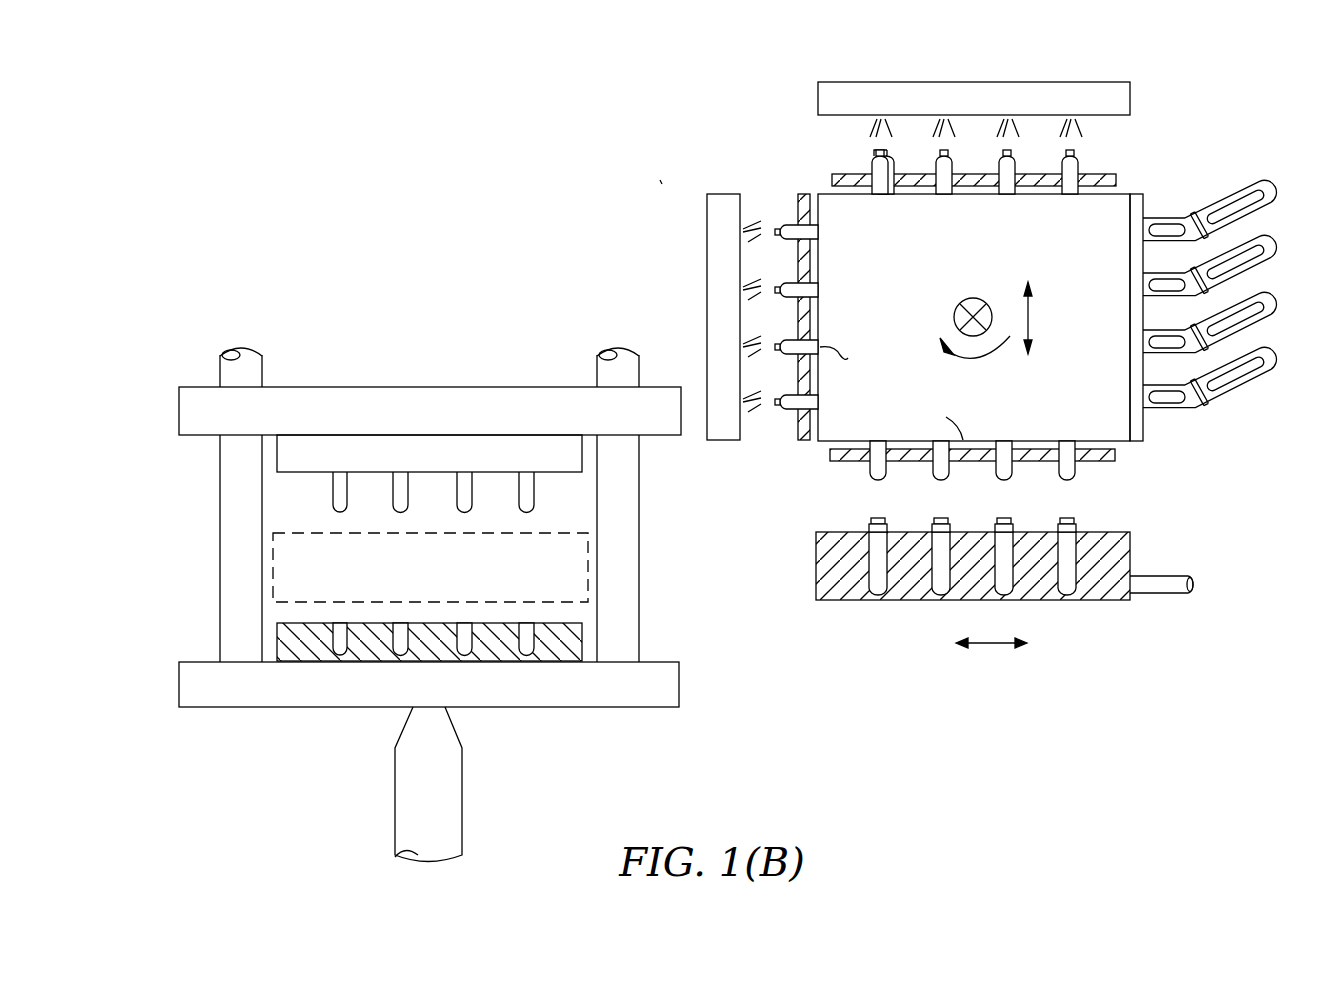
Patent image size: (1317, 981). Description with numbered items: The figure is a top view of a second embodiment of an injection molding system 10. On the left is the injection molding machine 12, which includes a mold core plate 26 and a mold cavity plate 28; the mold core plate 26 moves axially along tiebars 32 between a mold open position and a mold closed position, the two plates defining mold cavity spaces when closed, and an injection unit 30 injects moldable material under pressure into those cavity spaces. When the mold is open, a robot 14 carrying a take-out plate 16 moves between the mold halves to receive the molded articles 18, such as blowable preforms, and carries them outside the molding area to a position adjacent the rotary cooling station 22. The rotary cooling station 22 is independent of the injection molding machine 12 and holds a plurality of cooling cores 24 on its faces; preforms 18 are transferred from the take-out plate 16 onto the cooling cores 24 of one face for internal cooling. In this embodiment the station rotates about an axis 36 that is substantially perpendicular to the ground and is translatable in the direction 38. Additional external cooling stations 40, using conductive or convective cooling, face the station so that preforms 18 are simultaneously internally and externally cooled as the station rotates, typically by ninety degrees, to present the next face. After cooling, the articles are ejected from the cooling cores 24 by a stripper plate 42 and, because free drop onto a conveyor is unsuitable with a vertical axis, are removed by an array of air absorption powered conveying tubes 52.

The injection molding system 10 is at (664, 186).
The injection molding machine 12 is at (181, 723).
The robot 14 is at (1128, 620).
The take-out plate 16 is at (898, 597).
The molded articles 18 is at (340, 497).
The rotary cooling station 22 is at (868, 257).
The cooling cores 24 is at (870, 472).
The mold core plate 26 is at (375, 417).
The mold cavity plate 28 is at (572, 650).
The injection unit 30 is at (447, 800).
The tiebars 32 is at (236, 352).
The axis of rotation 36 is at (972, 298).
The translation direction 38 is at (1033, 313).
The external cooling stations 40 is at (875, 72).
The stripper plate 42 is at (1038, 174).
The air absorption powered conveying tubes 52 is at (1165, 218).